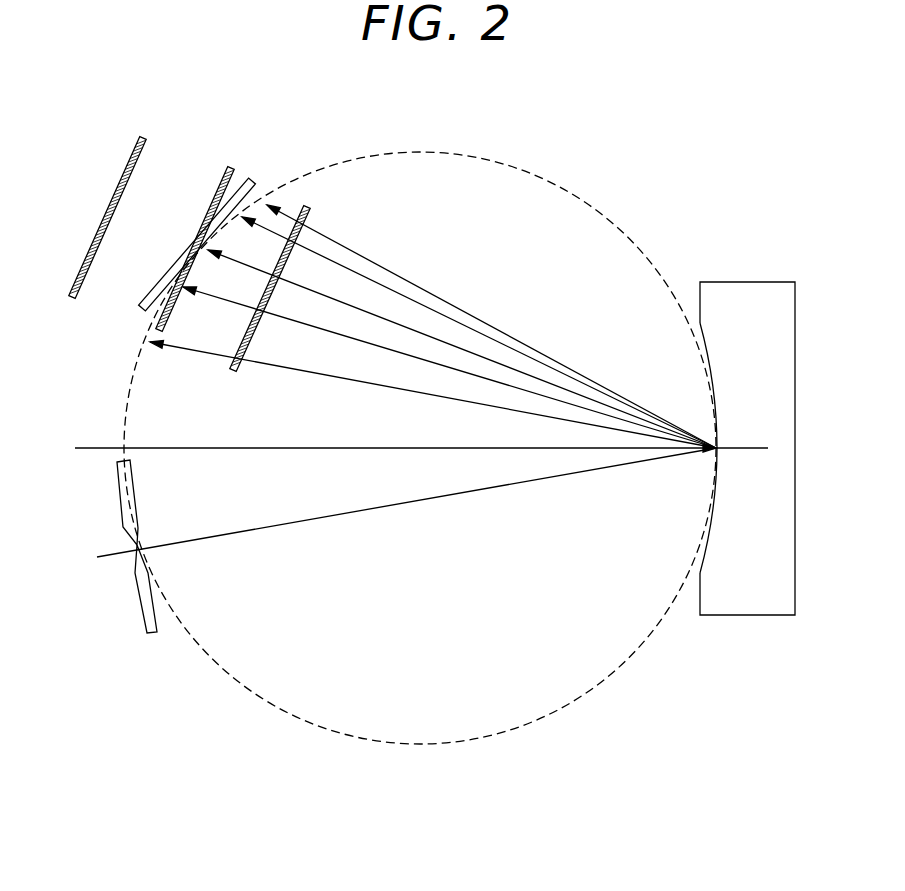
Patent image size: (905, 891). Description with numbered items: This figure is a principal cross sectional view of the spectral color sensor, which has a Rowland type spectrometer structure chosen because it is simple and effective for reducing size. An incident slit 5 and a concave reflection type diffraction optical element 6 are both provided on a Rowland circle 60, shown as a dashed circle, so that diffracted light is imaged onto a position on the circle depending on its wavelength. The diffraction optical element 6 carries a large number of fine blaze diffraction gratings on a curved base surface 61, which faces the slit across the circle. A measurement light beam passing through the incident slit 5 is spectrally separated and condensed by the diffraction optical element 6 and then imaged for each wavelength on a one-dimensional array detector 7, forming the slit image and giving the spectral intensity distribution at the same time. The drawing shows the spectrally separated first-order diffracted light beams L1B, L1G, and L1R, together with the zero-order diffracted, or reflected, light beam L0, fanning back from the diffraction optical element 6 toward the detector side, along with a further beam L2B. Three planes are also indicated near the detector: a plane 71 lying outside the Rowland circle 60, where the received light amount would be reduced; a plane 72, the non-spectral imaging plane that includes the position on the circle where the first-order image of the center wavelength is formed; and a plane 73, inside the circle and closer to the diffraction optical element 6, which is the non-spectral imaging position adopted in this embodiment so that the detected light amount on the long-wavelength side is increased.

The incident slit 5 is at (152, 635).
The concave reflection type diffraction optical element 6 is at (747, 456).
The Rowland circle 60 is at (420, 748).
The curved base surface 61 is at (708, 343).
The one-dimensional array detector 7 is at (160, 273).
The plane 71 is at (143, 135).
The plane 72 is at (232, 165).
The plane 73 is at (226, 372).
The zero-order diffracted light beam L0 is at (300, 370).
The first-order diffracted light beam L1B is at (318, 327).
The first-order diffracted light beam L1G is at (378, 316).
The first-order diffracted light beam L1R is at (432, 308).
The blue light beam L2B is at (508, 333).